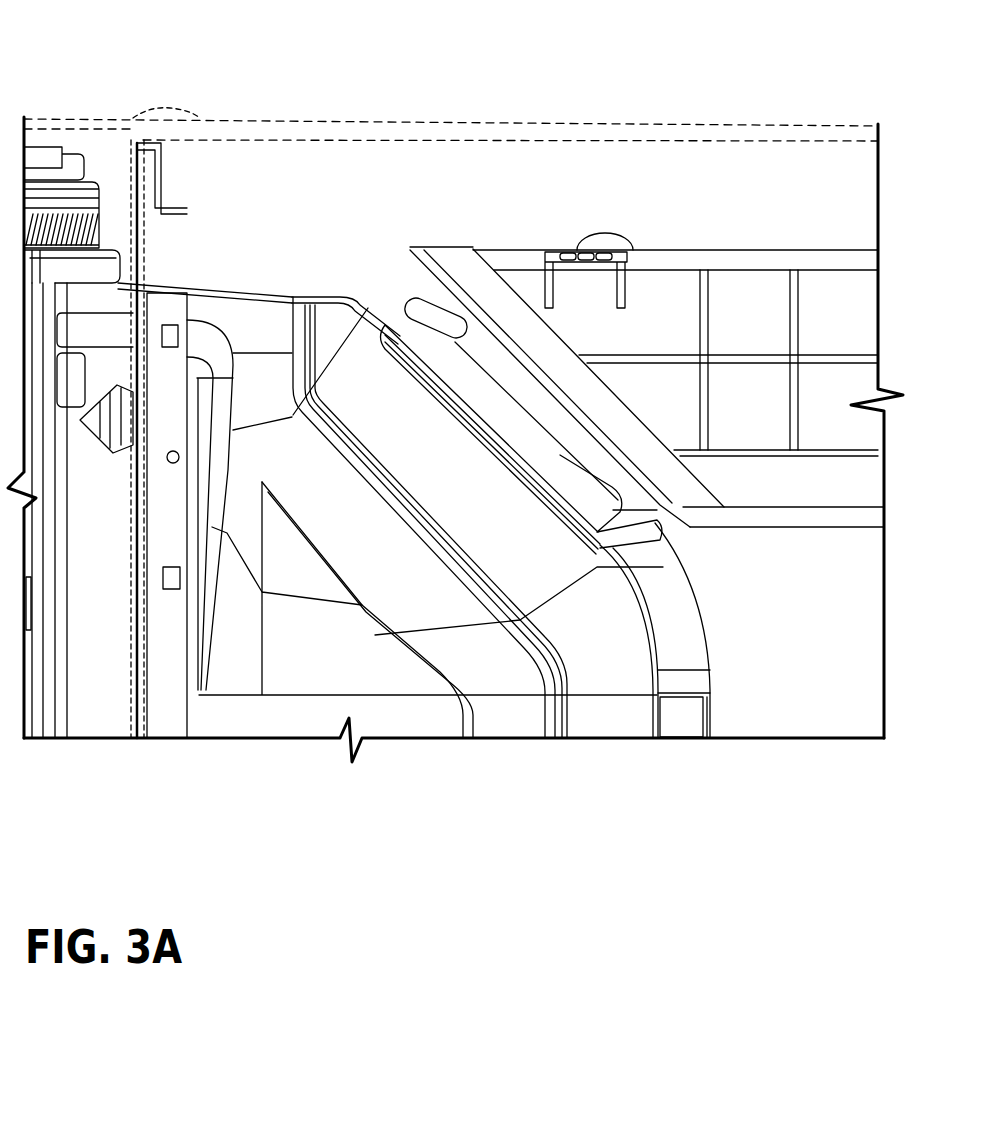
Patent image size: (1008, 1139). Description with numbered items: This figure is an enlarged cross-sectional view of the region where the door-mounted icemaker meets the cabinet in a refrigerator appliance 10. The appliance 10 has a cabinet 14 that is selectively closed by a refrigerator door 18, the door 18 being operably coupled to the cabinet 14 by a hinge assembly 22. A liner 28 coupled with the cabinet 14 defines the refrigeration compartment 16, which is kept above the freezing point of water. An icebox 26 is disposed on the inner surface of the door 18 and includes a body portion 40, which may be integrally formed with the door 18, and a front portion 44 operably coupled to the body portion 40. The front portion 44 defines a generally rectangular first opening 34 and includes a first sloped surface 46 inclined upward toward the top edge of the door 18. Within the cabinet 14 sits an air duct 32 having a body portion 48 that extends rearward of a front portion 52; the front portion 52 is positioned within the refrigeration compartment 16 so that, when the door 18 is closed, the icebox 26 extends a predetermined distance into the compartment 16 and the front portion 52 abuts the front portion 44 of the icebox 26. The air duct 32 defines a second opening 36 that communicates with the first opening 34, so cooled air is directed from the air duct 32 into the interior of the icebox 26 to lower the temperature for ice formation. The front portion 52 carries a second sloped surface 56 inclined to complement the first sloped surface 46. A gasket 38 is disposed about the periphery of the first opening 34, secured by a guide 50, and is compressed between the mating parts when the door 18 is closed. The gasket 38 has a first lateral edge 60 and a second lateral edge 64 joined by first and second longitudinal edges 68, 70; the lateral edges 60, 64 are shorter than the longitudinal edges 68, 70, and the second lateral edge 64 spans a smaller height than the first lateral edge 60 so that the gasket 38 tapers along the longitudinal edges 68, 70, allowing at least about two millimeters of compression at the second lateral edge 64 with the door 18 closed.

The refrigerator appliance 10 is at (785, 100).
The cabinet 14 is at (463, 122).
The refrigeration compartment 16 is at (818, 628).
The refrigerator door 18 is at (42, 163).
The hinge assembly 22 is at (167, 100).
The icebox 26 is at (465, 368).
The liner 28 is at (662, 175).
The air duct 32 is at (752, 262).
The first opening 34 is at (477, 345).
The second opening 36 is at (544, 374).
The gasket 38 is at (613, 555).
The body portion 40 is at (623, 730).
The front portion 44 is at (338, 355).
The first sloped surface 46 is at (312, 672).
The body portion 48 is at (837, 488).
The guide 50 is at (582, 410).
The front portion 52 is at (453, 247).
The second sloped surface 56 is at (590, 372).
The first lateral edge 60 is at (535, 438).
The second lateral edge 64 is at (580, 452).
The first longitudinal edge 68 is at (420, 295).
The second longitudinal edge 70 is at (648, 517).